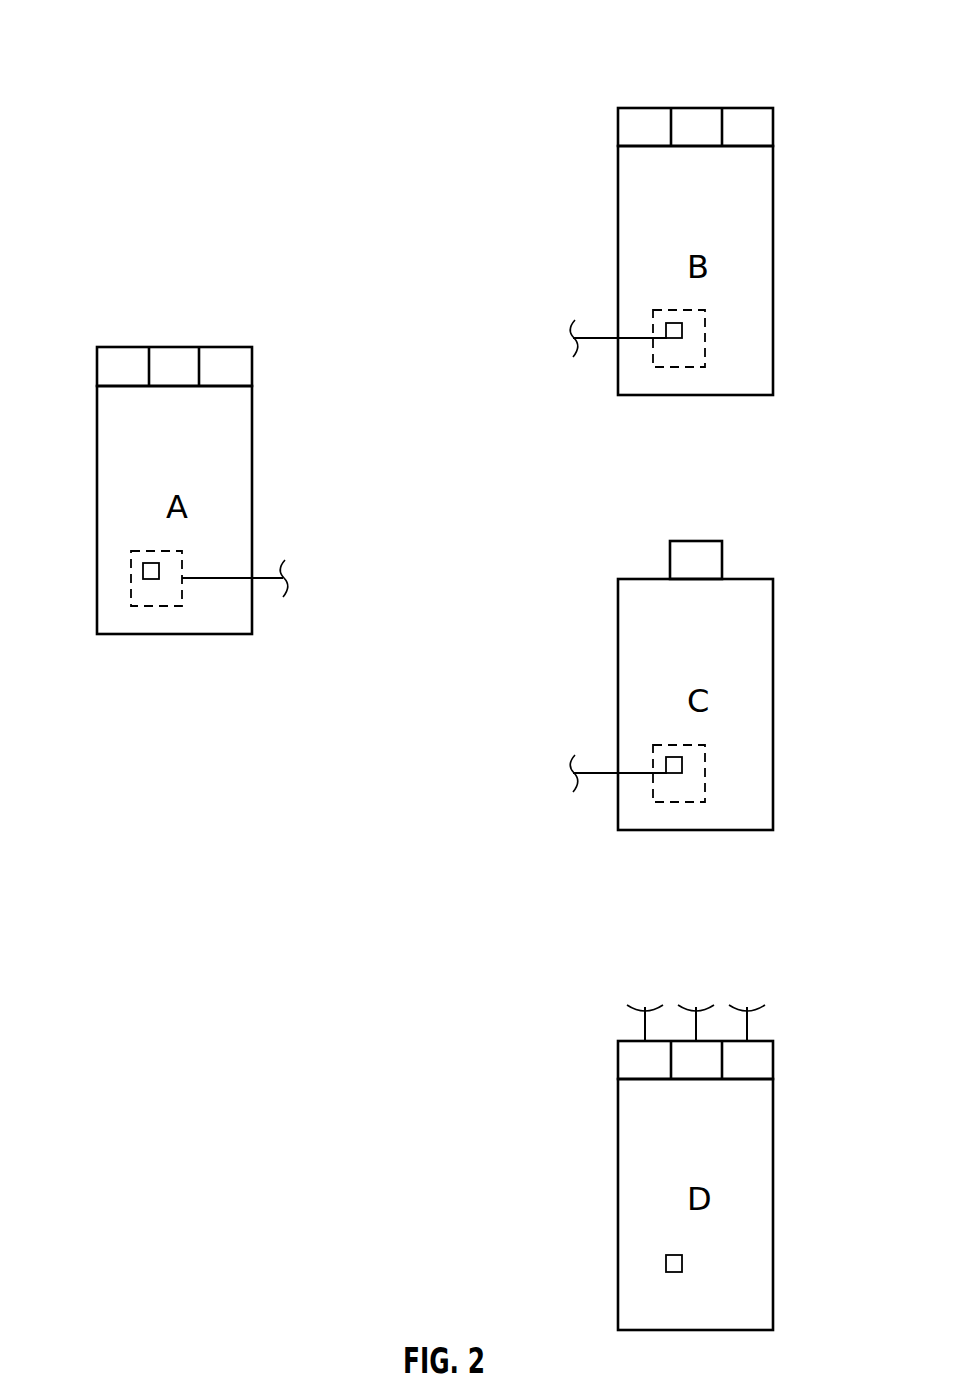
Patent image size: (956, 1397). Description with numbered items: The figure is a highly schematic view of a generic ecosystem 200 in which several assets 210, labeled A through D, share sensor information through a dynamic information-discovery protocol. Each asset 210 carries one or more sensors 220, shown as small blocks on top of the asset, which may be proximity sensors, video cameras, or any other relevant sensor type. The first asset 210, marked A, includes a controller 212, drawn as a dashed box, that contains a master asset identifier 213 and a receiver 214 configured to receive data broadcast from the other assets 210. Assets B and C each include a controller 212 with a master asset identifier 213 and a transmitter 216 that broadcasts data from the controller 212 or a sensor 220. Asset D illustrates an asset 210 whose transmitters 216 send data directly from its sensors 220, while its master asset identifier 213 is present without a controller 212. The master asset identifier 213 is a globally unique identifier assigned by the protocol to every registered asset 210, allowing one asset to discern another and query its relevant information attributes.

The generic ecosystem 200 is at (170, 87).
The asset 210 is at (478, 738).
The controller 212 is at (478, 545).
The master asset identifier 213 is at (351, 774).
The receiver 214 is at (262, 580).
The transmitter 216 is at (692, 680).
The sensor 220 is at (477, 577).